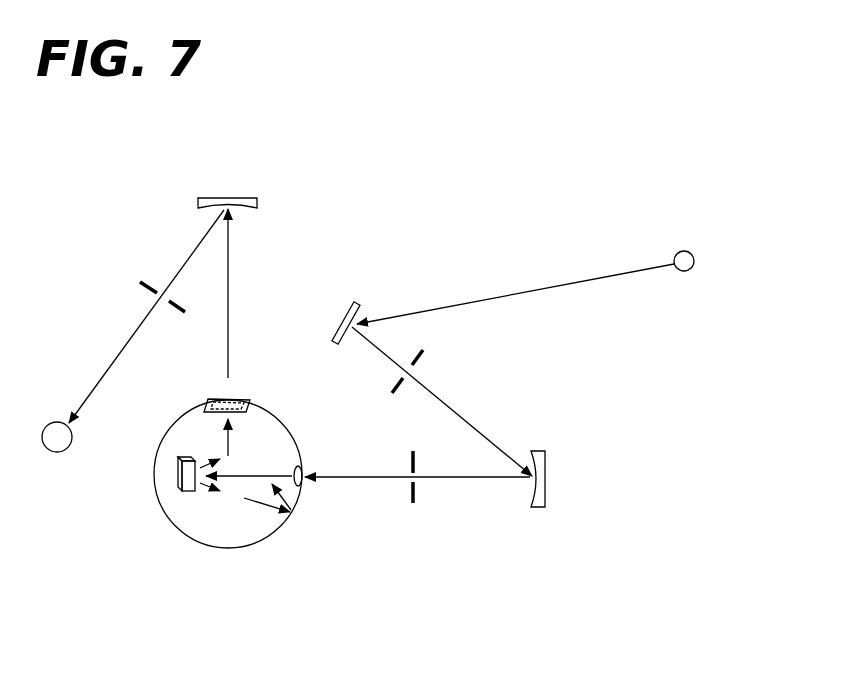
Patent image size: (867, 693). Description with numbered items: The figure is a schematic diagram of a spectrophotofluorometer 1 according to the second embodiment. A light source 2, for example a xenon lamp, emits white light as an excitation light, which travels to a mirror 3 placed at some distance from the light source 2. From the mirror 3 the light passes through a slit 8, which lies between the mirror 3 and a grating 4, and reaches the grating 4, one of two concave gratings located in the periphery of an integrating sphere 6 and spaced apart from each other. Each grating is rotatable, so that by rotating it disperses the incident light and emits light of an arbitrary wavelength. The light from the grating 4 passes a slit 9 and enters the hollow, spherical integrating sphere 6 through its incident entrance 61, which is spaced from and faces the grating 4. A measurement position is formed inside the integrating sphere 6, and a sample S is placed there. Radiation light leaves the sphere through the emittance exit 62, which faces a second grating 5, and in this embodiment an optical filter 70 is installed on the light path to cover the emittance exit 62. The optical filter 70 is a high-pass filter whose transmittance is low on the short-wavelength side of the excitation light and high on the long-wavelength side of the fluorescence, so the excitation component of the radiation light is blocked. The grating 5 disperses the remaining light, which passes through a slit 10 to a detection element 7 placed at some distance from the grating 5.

The spectrophotofluorometer 1 is at (445, 240).
The light source 2 is at (690, 252).
The mirror 3 is at (347, 304).
The grating 4 is at (545, 463).
The grating 5 is at (240, 196).
The integrating sphere 6 is at (228, 550).
The incident entrance 61 is at (303, 464).
The emittance exit 62 is at (212, 399).
The optical filter 70 is at (247, 400).
The detection element 7 is at (52, 452).
The slit 8 is at (418, 361).
The slit 9 is at (415, 494).
The slit 10 is at (148, 280).
The sample S is at (178, 490).